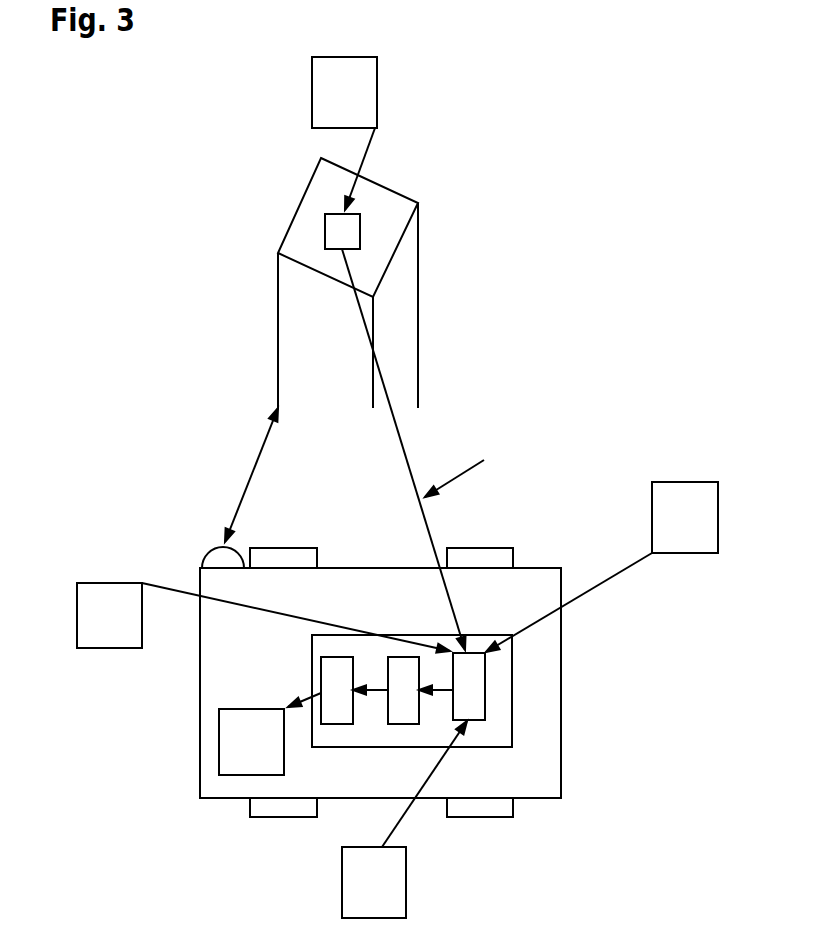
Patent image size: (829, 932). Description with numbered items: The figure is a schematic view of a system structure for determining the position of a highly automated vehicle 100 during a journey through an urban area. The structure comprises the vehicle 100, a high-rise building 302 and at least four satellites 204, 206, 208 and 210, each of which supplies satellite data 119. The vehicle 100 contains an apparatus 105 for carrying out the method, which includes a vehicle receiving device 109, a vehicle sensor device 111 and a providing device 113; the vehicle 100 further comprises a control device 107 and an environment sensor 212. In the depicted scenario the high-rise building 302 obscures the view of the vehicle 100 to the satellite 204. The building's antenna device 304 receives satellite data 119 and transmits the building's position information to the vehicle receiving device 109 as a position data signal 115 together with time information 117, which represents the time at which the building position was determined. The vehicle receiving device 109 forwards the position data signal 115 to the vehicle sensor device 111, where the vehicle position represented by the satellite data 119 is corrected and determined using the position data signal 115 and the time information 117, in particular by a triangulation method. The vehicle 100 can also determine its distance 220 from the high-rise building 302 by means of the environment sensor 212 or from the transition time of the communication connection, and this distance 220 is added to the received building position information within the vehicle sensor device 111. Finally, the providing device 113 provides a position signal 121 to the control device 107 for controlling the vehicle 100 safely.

The highly automated vehicle 100 is at (543, 565).
The apparatus 105 is at (515, 727).
The control device 107 is at (219, 737).
The vehicle receiving device 109 is at (482, 650).
The vehicle sensor device 111 is at (402, 657).
The providing device 113 is at (335, 657).
The position data signal 115 is at (420, 493).
The time information 117 is at (453, 490).
The satellite data 119 is at (377, 143).
The position signal 121 is at (293, 705).
The satellite 204 is at (378, 110).
The satellite 206 is at (682, 482).
The satellite 208 is at (406, 882).
The satellite 210 is at (90, 583).
The environment sensor 212 is at (208, 549).
The distance 220 is at (240, 497).
The high-rise building 302 is at (308, 176).
The antenna device 304 is at (325, 231).